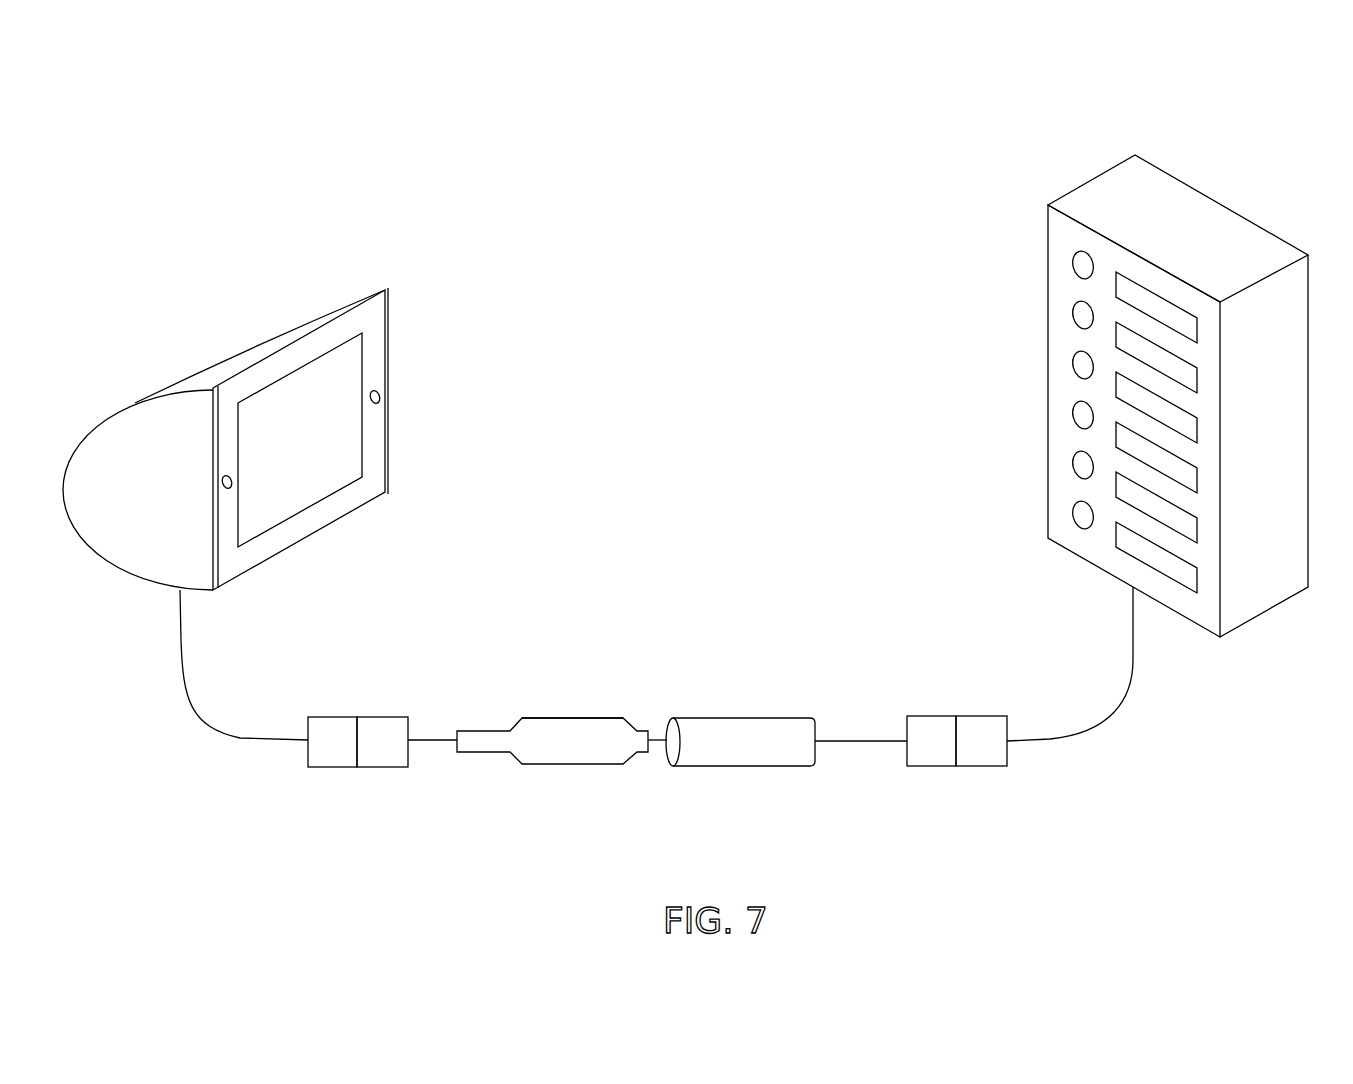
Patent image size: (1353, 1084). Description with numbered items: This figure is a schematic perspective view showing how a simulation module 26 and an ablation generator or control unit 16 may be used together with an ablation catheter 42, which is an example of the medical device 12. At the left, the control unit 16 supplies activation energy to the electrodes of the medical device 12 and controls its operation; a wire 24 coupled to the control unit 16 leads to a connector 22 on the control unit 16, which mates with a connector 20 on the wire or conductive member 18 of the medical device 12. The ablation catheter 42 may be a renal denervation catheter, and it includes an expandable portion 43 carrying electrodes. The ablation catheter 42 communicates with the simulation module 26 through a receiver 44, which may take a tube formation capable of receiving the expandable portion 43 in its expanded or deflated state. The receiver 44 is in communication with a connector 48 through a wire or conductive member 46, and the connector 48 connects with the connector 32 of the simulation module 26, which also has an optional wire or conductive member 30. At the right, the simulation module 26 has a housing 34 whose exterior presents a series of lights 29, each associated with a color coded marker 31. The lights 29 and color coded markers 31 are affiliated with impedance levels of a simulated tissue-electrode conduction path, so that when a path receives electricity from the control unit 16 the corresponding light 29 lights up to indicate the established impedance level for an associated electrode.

The medical device 12 is at (664, 736).
The control unit 16 is at (205, 362).
The conductive member 18 is at (432, 740).
The connector 20 is at (380, 767).
The connector 22 is at (330, 767).
The wire 24 is at (238, 738).
The simulation module 26 is at (1151, 359).
The light 29 is at (1073, 261).
The conductive member 30 is at (1083, 733).
The color coded marker 31 is at (1197, 330).
The connector 32 is at (982, 766).
The housing 34 is at (1205, 207).
The ablation catheter 42 is at (572, 765).
The expandable portion 43 is at (611, 718).
The receiver 44 is at (740, 766).
The conductive member 46 is at (862, 741).
The connector 48 is at (932, 766).